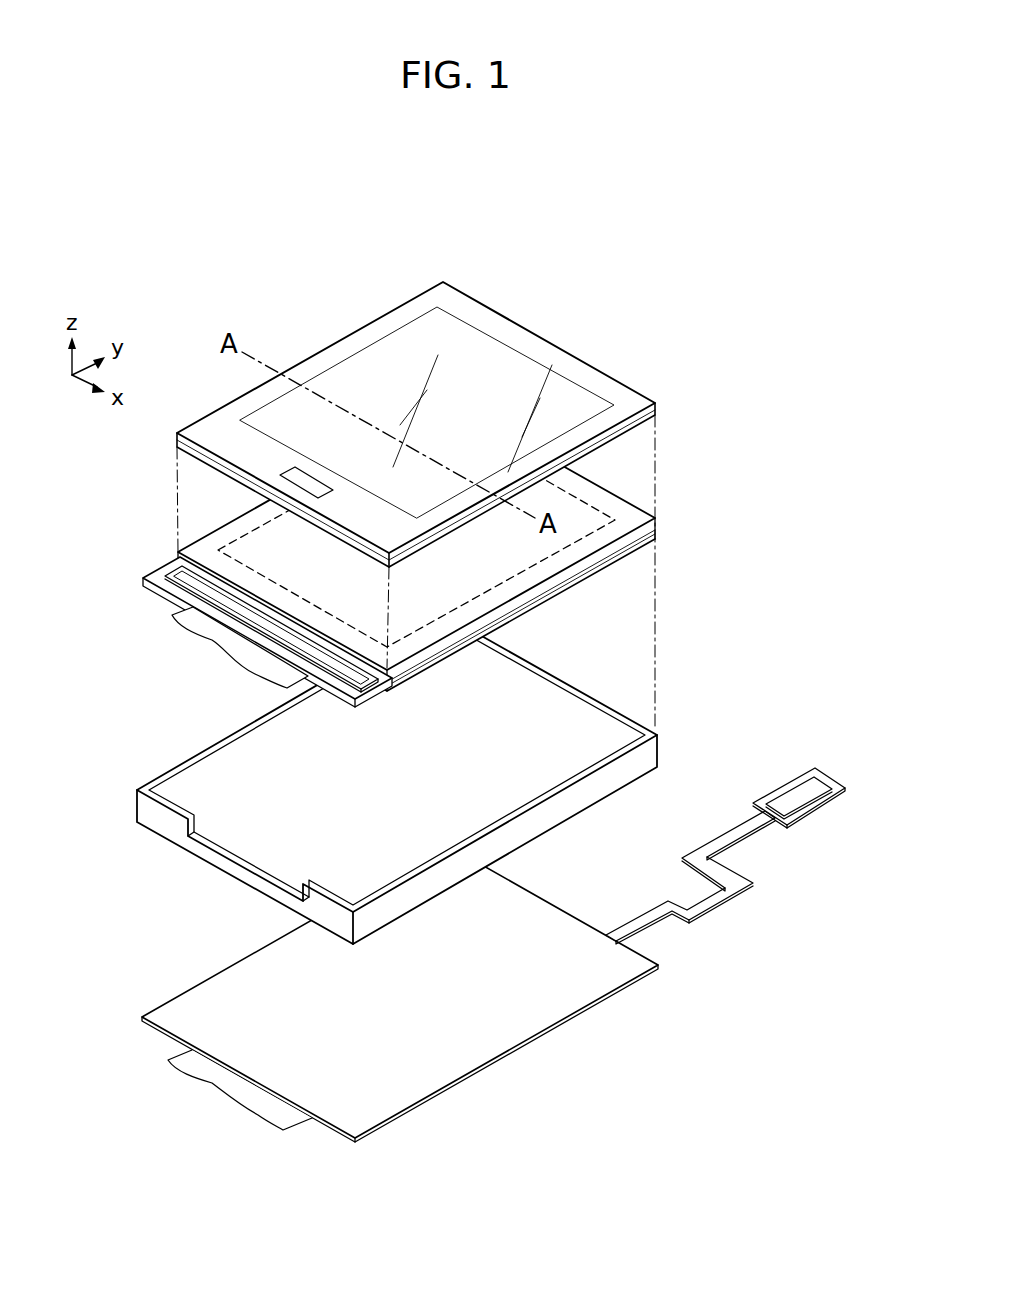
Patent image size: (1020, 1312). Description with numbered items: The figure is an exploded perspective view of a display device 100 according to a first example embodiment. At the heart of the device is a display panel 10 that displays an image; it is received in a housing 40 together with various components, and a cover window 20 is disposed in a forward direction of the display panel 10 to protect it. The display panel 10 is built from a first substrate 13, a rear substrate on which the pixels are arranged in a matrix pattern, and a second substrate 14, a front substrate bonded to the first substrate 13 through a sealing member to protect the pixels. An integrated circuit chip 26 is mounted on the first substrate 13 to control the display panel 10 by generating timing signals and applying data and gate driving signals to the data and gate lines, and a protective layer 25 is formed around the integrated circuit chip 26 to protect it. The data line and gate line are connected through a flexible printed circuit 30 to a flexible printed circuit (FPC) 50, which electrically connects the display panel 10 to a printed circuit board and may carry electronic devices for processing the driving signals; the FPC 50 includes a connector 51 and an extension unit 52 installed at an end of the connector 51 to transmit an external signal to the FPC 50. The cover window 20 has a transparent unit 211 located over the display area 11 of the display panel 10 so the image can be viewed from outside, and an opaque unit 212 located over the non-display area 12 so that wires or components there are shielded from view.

The display device 100 is at (430, 182).
The display panel 10 is at (577, 591).
The display area 11 is at (488, 572).
The non-display area 12 is at (592, 548).
The first substrate 13 is at (648, 537).
The second substrate 14 is at (633, 517).
The cover window 20 is at (621, 373).
The transparent unit 211 is at (457, 337).
The opaque unit 212 is at (527, 343).
The protective layer 25 is at (158, 575).
The integrated circuit chip 26 is at (170, 566).
The flexible printed circuit 30 is at (223, 635).
The housing 40 is at (640, 705).
The flexible printed circuit (FPC) 50 is at (540, 1012).
The connector 51 is at (803, 790).
The extension unit 52 is at (743, 884).